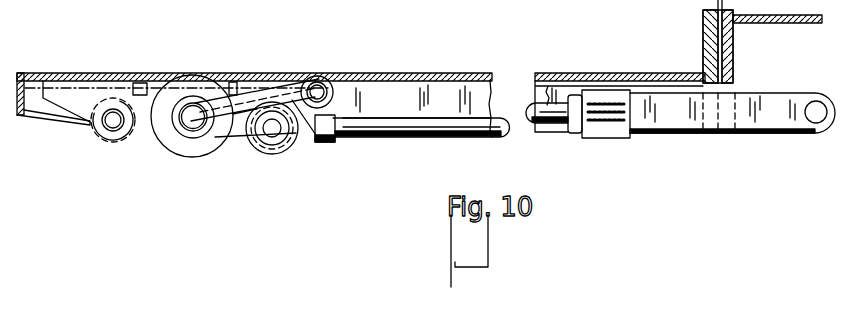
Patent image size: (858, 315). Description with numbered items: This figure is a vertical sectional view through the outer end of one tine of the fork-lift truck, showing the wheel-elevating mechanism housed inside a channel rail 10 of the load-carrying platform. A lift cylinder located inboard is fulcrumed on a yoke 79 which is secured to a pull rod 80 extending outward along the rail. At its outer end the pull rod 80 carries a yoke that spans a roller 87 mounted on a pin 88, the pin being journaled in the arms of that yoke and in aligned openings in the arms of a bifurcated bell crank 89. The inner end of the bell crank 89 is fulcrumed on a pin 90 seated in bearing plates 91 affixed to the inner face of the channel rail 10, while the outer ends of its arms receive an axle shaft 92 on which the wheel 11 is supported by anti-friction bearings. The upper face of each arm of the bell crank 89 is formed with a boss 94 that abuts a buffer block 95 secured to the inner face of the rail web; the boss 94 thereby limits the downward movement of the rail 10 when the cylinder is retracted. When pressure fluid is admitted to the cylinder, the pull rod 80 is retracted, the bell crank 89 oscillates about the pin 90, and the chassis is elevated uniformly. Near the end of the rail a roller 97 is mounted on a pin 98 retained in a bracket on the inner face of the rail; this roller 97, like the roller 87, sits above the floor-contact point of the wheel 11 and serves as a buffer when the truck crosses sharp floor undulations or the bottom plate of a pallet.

The channel rail 10 is at (447, 73).
The wheel 11 is at (192, 150).
The yoke 79 is at (677, 125).
The pull rod 80 is at (432, 125).
The roller 87 is at (284, 145).
The pin 88 is at (276, 131).
The bifurcated bell crank 89 is at (237, 135).
The pin 90 is at (318, 90).
The bearing plates 91 is at (314, 5).
The axle shaft 92 is at (193, 115).
The boss 94 is at (173, 95).
The buffer block 95 is at (231, 85).
The roller 97 is at (113, 140).
The pin 98 is at (112, 121).